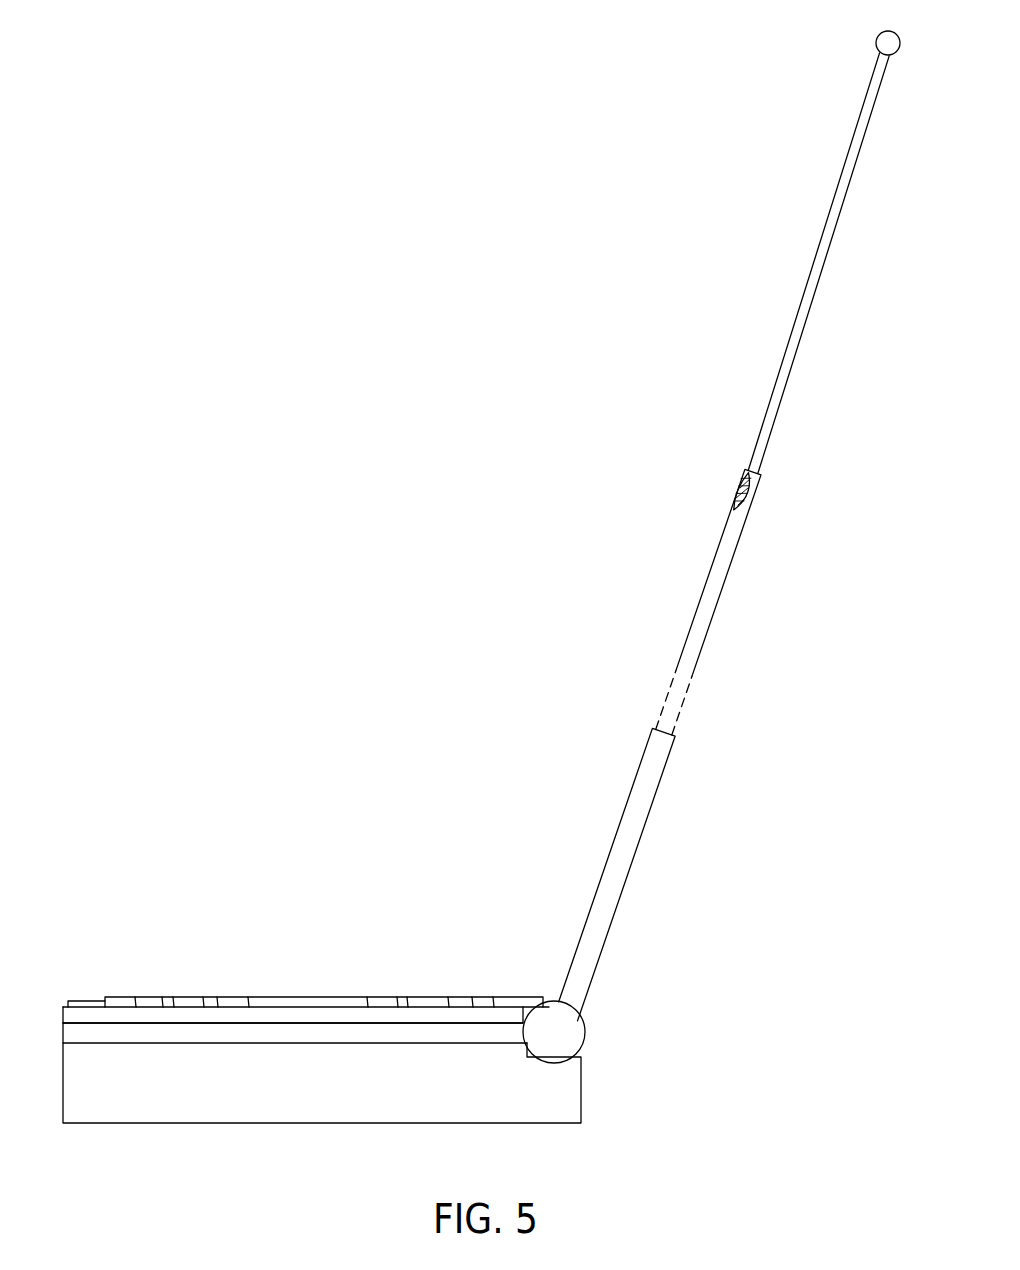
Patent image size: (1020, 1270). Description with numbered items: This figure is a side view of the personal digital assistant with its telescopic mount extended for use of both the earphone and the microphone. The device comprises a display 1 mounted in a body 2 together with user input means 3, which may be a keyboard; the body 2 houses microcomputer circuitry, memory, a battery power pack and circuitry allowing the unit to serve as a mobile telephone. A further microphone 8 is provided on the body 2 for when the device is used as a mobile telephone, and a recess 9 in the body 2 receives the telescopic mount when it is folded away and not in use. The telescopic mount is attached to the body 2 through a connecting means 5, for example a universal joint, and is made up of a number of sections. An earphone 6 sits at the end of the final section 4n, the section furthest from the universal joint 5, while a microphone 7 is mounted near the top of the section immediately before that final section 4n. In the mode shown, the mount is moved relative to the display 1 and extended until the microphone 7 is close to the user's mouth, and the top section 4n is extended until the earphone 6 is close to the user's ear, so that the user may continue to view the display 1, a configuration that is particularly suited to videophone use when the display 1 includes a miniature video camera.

The display 1 is at (352, 958).
The body 2 is at (270, 1124).
The user input means 3 is at (452, 997).
The final section 4n is at (838, 182).
The connecting means 5 is at (584, 1032).
The earphone 6 is at (880, 40).
The microphone 7 is at (742, 492).
The microphone 8 is at (80, 1000).
The recess 9 is at (160, 1022).